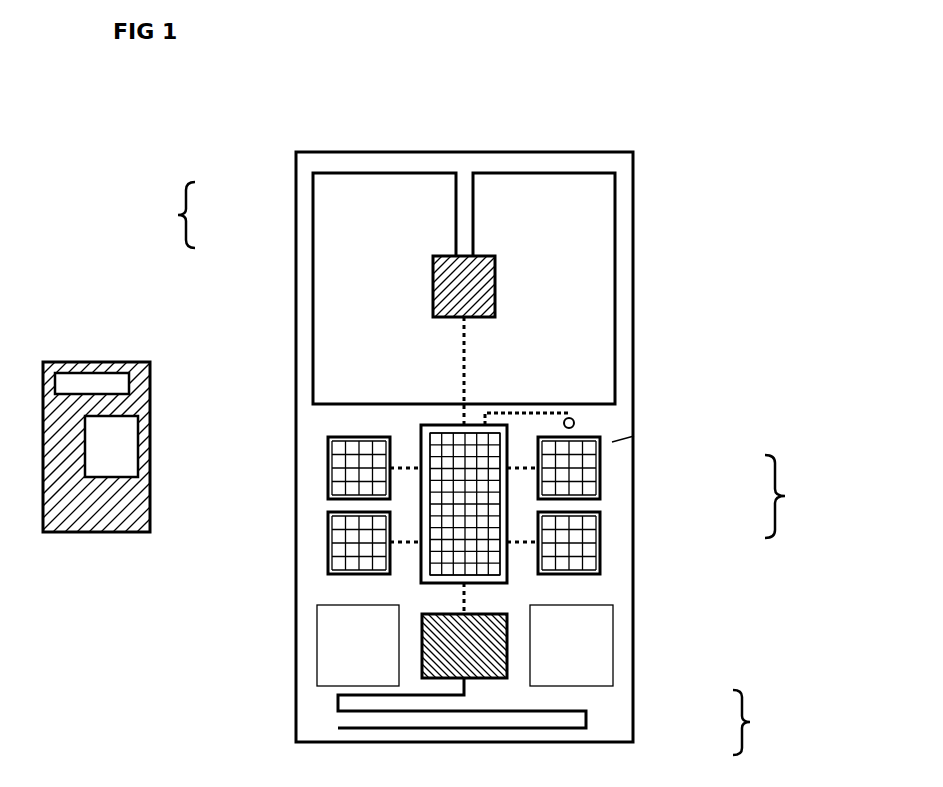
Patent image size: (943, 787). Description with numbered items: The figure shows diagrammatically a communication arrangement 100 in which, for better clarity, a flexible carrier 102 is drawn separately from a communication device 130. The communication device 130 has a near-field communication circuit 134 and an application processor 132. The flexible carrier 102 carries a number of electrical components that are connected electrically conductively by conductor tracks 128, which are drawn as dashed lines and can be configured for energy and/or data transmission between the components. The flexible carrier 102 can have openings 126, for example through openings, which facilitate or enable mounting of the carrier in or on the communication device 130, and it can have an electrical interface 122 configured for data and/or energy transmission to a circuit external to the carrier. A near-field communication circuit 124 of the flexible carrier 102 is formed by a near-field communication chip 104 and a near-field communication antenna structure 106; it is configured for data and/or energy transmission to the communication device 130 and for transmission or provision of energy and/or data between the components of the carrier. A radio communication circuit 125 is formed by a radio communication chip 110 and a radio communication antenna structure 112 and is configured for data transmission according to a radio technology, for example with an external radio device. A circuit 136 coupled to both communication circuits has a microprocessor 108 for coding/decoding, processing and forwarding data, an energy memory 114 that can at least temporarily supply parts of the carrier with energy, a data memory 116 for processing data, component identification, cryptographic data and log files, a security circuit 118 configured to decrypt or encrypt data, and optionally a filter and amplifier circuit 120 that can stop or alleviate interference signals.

The communication arrangement 100 is at (556, 108).
The flexible carrier 102 is at (634, 436).
The near-field communication chip 104 is at (443, 266).
The near-field communication antenna structure 106 is at (313, 198).
The microprocessor 108 is at (443, 447).
The radio communication chip 110 is at (497, 656).
The radio communication antenna structure 112 is at (583, 727).
The energy memory 114 is at (330, 467).
The data memory 116 is at (338, 553).
The security circuit 118 is at (590, 481).
The filter and amplifier circuit 120 is at (583, 553).
The electrical interface 122 is at (575, 421).
The near-field communication circuit 124 is at (161, 215).
The radio communication circuit 125 is at (769, 722).
The openings 126 is at (337, 636).
The conductor tracks 128 is at (466, 361).
The communication device 130 is at (86, 532).
The application processor 132 is at (63, 382).
The near-field communication circuit 134 is at (107, 432).
The circuit 136 is at (801, 496).